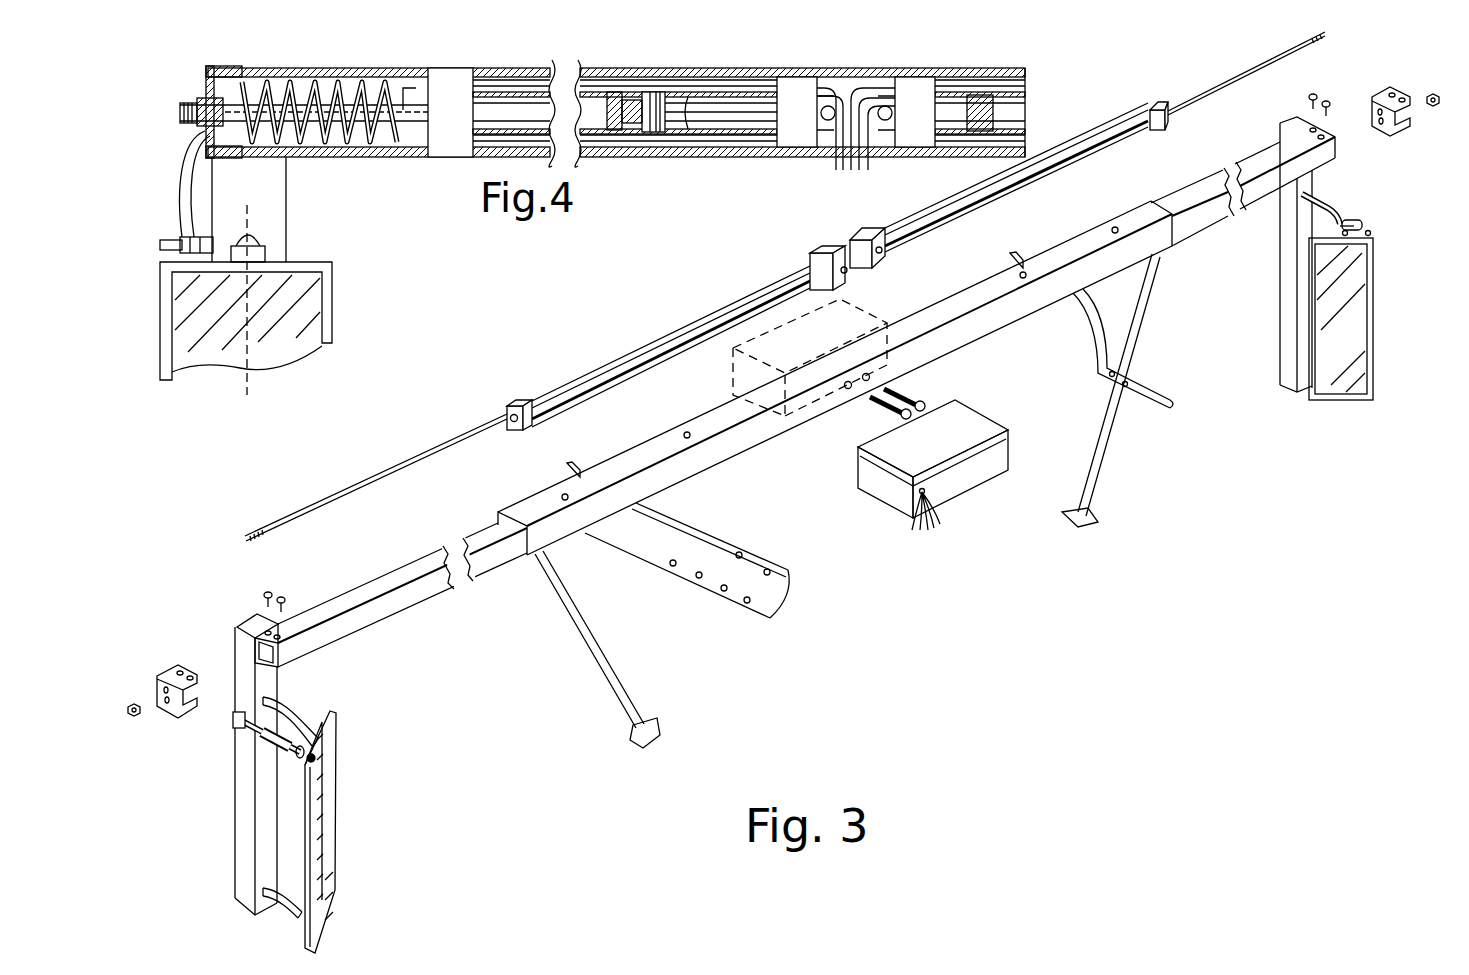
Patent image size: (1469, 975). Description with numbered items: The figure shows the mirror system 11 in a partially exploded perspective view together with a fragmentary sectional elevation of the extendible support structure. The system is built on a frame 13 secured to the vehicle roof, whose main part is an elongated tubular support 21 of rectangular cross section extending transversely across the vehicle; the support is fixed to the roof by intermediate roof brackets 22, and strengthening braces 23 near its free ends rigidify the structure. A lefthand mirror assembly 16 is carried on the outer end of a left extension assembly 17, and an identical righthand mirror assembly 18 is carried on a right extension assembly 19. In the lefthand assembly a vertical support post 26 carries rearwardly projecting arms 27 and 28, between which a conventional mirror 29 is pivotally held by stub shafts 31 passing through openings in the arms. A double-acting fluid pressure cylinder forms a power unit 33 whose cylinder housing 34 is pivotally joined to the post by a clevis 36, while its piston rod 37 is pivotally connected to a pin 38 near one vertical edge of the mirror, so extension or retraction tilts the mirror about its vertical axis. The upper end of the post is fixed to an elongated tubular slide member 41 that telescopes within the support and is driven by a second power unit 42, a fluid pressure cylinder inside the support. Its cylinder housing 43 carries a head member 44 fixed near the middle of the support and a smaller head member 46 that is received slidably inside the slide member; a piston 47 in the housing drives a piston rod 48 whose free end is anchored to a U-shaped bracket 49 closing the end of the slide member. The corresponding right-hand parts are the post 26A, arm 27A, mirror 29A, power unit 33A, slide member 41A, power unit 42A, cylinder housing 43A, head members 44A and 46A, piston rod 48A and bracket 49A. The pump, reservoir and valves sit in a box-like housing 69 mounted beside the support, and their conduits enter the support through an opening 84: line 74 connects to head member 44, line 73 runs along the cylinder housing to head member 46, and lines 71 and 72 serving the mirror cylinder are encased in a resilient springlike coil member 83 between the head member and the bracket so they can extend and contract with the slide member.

In FIG. 3, the mirror system 11 is at (915, 572).
In FIG. 3, the frame 13 is at (682, 422).
In FIG. 4, the lefthand mirror assembly 16 is at (354, 292).
In FIG. 3, the lefthand mirror assembly 16 is at (216, 866).
In FIG. 4, the left extension assembly 17 is at (372, 162).
In FIG. 3, the left extension assembly 17 is at (362, 448).
In FIG. 3, the righthand mirror assembly 18 is at (1382, 255).
In FIG. 3, the right extension assembly 19 is at (1158, 82).
In FIG. 4, the tubular support 21 is at (861, 70).
In FIG. 3, the tubular support 21 is at (742, 446).
In FIG. 3, the roof brackets 22 is at (760, 592).
In FIG. 3, the strengthening braces 23 is at (610, 664).
In FIG. 4, the support post 26 is at (282, 180).
In FIG. 3, the support post 26 is at (237, 822).
In FIG. 3, the support post 26A is at (1279, 328).
In FIG. 4, the arm 27 is at (310, 258).
In FIG. 3, the arm 27 is at (292, 702).
In FIG. 3, the arm 27A is at (1338, 205).
In FIG. 3, the arm 28 is at (282, 906).
In FIG. 4, the mirror 29 is at (298, 346).
In FIG. 3, the mirror 29 is at (330, 814).
In FIG. 3, the mirror 29A is at (1357, 326).
In FIG. 4, the stub shafts 31 is at (250, 236).
In FIG. 4, the power unit 33 is at (167, 230).
In FIG. 3, the power unit 33 is at (266, 746).
In FIG. 3, the power unit 33A is at (1334, 206).
In FIG. 3, the cylinder housing 34 is at (256, 732).
In FIG. 3, the clevis 36 is at (232, 716).
In FIG. 3, the piston rod 37 is at (300, 760).
In FIG. 4, the pin 38 is at (160, 250).
In FIG. 3, the pin 38 is at (316, 758).
In FIG. 4, the slide member 41 is at (378, 76).
In FIG. 3, the slide member 41 is at (390, 604).
In FIG. 3, the slide member 41A is at (1194, 218).
In FIG. 4, the power unit 42 is at (746, 88).
In FIG. 3, the power unit 42 is at (596, 396).
In FIG. 4, the power unit 42A is at (1002, 90).
In FIG. 3, the power unit 42A is at (1114, 128).
In FIG. 4, the cylinder housing 43 is at (734, 116).
In FIG. 3, the cylinder housing 43 is at (649, 346).
In FIG. 3, the cylinder housing 43A is at (1044, 170).
In FIG. 4, the head member 44 is at (808, 85).
In FIG. 3, the head member 44 is at (812, 254).
In FIG. 4, the head member 44A is at (920, 94).
In FIG. 3, the head member 44A is at (882, 257).
In FIG. 4, the head member 46 is at (450, 90).
In FIG. 3, the head member 46 is at (511, 402).
In FIG. 3, the head member 46A is at (1168, 122).
In FIG. 4, the piston 47 is at (650, 124).
In FIG. 4, the piston rod 48 is at (418, 112).
In FIG. 3, the piston rod 48 is at (462, 442).
In FIG. 3, the piston rod 48A is at (1236, 78).
In FIG. 4, the U-shaped bracket 49 is at (205, 80).
In FIG. 3, the U-shaped bracket 49 is at (158, 678).
In FIG. 3, the U-shaped bracket 49A is at (1402, 88).
In FIG. 3, the box-like housing 69 is at (984, 480).
In FIG. 4, the line 71 is at (174, 198).
In FIG. 4, the line 72 is at (172, 176).
In FIG. 4, the line 73 is at (832, 172).
In FIG. 4, the line 74 is at (845, 177).
In FIG. 4, the springlike coil member 83 is at (328, 100).
In FIG. 4, the opening 84 is at (885, 168).